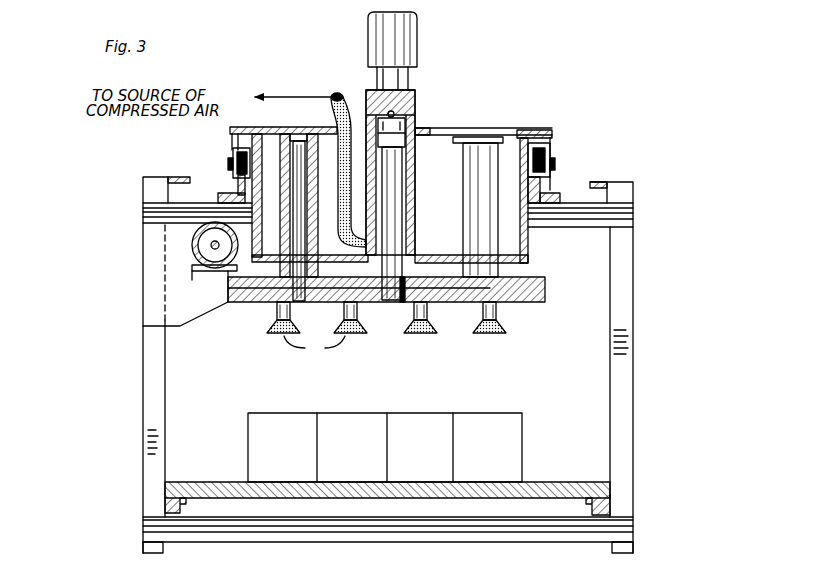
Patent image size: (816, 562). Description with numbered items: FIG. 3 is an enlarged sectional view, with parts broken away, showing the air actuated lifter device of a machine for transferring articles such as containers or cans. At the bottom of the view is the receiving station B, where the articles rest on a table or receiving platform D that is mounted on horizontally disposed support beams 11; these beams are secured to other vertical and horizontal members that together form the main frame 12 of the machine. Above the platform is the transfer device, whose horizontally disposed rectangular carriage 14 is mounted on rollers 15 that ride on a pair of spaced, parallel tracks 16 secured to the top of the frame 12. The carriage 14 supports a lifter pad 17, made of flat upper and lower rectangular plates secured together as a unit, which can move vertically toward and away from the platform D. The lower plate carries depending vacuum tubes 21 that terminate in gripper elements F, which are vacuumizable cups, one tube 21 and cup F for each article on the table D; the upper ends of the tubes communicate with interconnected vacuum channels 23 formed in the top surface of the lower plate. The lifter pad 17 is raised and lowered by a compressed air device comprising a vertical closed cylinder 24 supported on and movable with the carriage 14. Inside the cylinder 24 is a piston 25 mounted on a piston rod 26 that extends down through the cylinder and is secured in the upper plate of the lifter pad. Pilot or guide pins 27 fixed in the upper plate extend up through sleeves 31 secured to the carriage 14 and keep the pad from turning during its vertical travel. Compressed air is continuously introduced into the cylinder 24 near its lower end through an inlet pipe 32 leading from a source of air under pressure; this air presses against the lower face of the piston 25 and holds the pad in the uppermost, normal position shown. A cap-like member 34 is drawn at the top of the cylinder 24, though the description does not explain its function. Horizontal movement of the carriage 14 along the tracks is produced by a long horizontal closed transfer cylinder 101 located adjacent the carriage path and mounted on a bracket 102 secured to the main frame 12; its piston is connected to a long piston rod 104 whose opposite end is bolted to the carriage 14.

The support beams 11 is at (180, 498).
The frame 12 is at (615, 458).
The carriage 14 is at (535, 130).
The rollers 15 is at (238, 153).
The tracks 16 is at (232, 195).
The lifter pad 17 is at (548, 292).
The vacuum tubes 21 is at (345, 318).
The vacuum channels 23 is at (403, 302).
The cylinder 24 is at (413, 222).
The piston 25 is at (410, 127).
The piston rod 26 is at (393, 195).
The guide pins 27 is at (298, 170).
The sleeves 31 is at (480, 155).
The inlet pipe 32 is at (333, 115).
The knob 34 is at (410, 38).
The transfer cylinder 101 is at (203, 287).
The bracket 102 is at (180, 327).
The piston rod 104 is at (215, 250).
The receiving station B is at (572, 432).
The receiving platform D is at (545, 487).
The gripper elements F is at (314, 347).